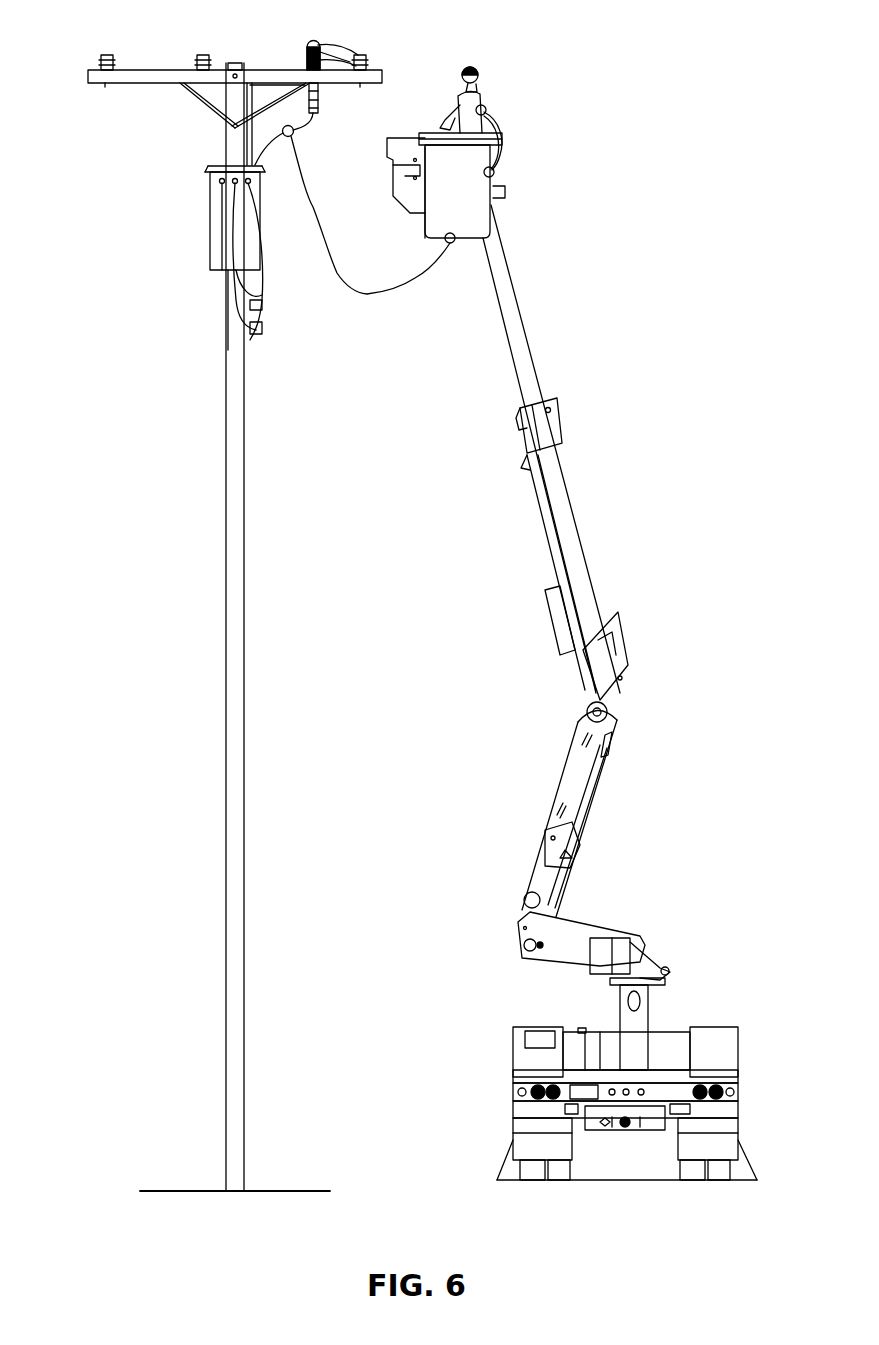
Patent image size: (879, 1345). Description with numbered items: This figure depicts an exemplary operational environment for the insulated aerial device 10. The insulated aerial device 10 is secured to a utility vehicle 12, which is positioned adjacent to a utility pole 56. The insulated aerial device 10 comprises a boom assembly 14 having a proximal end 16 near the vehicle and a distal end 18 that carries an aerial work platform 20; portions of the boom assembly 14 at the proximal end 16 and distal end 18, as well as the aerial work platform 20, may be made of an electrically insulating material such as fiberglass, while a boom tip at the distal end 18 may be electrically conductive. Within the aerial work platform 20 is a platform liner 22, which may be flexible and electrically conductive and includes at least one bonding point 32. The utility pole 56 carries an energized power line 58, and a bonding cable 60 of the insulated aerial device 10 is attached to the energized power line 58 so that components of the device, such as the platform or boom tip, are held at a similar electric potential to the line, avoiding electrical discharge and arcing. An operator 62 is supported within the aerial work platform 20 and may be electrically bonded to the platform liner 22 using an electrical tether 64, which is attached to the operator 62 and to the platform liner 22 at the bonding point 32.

The insulated aerial device 10 is at (672, 304).
The utility vehicle 12 is at (530, 1027).
The boom assembly 14 is at (457, 477).
The proximal end 16 is at (534, 872).
The distal end 18 is at (512, 268).
The aerial work platform 20 is at (425, 226).
The platform liner 22 is at (432, 133).
The bonding point 32 is at (495, 174).
The utility pole 56 is at (226, 440).
The energized power line 58 is at (297, 127).
The bonding cable 60 is at (367, 295).
The operator 62 is at (480, 72).
The electrical tether 64 is at (500, 122).